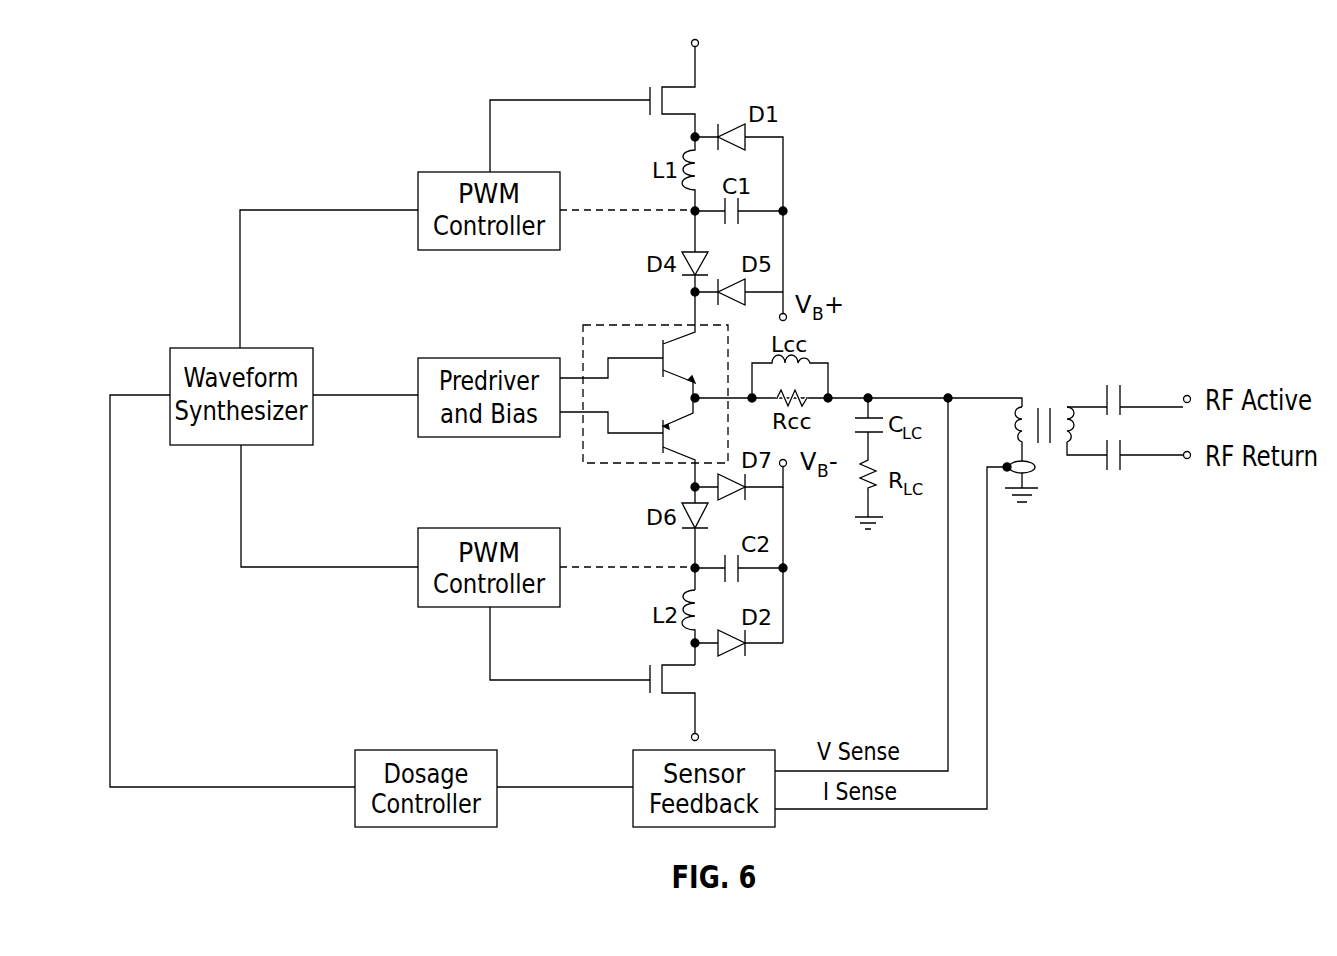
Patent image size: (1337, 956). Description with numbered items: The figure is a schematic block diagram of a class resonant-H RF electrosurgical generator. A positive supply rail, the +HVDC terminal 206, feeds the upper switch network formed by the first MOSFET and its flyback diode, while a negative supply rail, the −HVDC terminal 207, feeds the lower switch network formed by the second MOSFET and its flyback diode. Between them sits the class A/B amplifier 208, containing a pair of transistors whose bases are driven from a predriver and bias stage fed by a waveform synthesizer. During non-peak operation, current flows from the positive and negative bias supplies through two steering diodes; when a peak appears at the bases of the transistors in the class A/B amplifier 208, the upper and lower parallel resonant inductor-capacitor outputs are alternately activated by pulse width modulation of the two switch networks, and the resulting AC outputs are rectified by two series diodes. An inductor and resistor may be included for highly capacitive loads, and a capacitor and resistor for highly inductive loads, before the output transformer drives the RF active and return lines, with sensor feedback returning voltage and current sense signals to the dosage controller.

The +HVDC terminal 206 is at (695, 75).
The −HVDC terminal 207 is at (695, 725).
The class A/B amplifier 208 is at (583, 324).